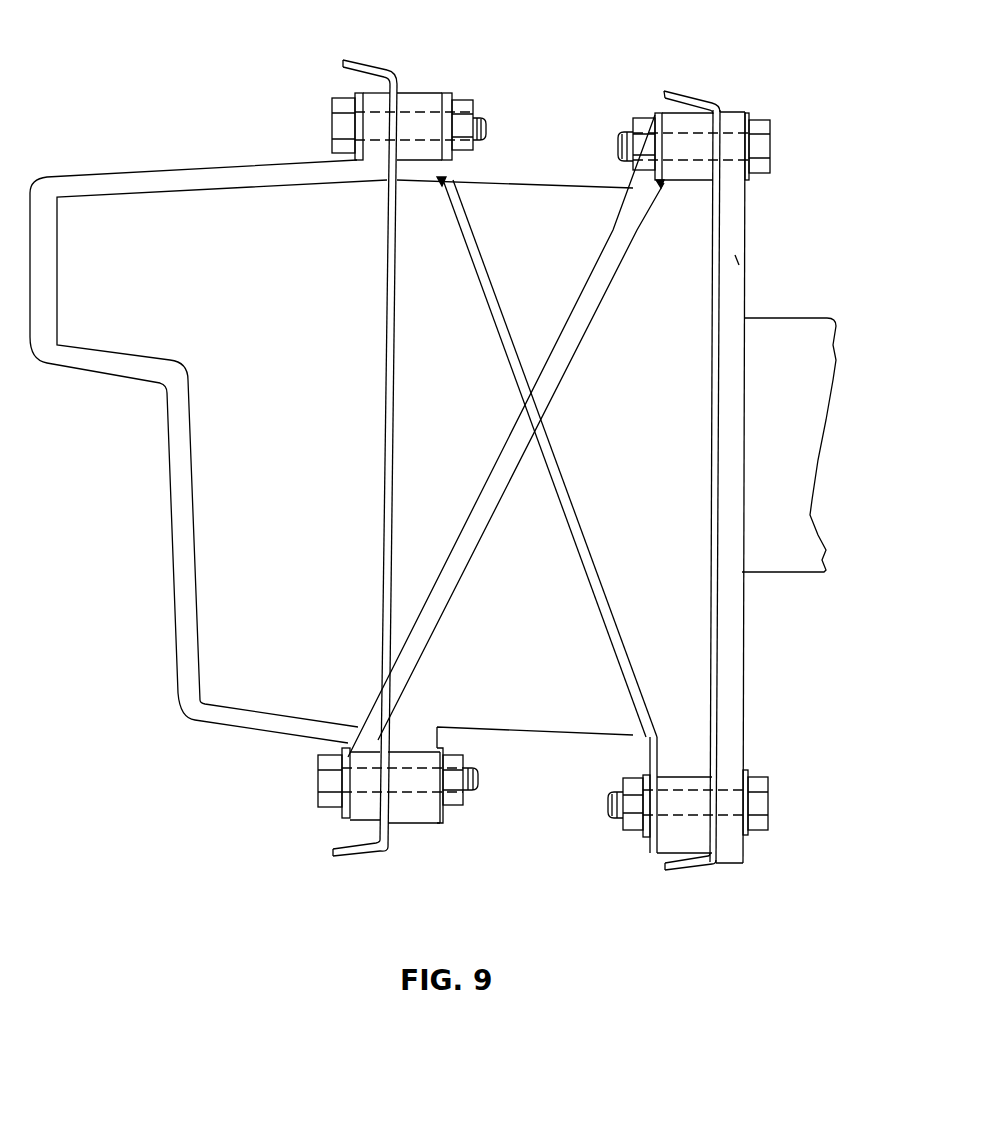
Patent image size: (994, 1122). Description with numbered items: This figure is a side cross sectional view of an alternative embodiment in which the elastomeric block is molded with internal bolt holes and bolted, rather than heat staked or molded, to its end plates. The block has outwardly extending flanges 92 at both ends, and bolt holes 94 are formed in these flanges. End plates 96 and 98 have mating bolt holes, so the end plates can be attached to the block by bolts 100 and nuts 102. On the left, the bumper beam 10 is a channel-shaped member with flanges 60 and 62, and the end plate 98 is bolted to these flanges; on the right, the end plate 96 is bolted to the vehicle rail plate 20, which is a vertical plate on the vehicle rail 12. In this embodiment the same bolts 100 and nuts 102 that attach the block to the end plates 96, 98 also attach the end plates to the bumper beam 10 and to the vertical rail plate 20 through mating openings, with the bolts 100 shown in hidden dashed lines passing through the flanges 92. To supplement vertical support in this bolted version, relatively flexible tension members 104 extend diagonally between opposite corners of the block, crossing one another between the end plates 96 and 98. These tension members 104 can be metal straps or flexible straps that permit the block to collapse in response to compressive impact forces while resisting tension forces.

The bumper beam 10 is at (170, 482).
The vehicle rail 12 is at (792, 328).
The vehicle rail plate 20 is at (737, 260).
The flange 60 is at (375, 96).
The flange 62 is at (363, 817).
The flange 92 is at (428, 96).
The bolt hole 94 is at (408, 113).
The end plate 96 is at (713, 699).
The end plate 98 is at (383, 617).
The bolt 100 is at (333, 146).
The nut 102 is at (468, 110).
The tension member 104 is at (553, 378).